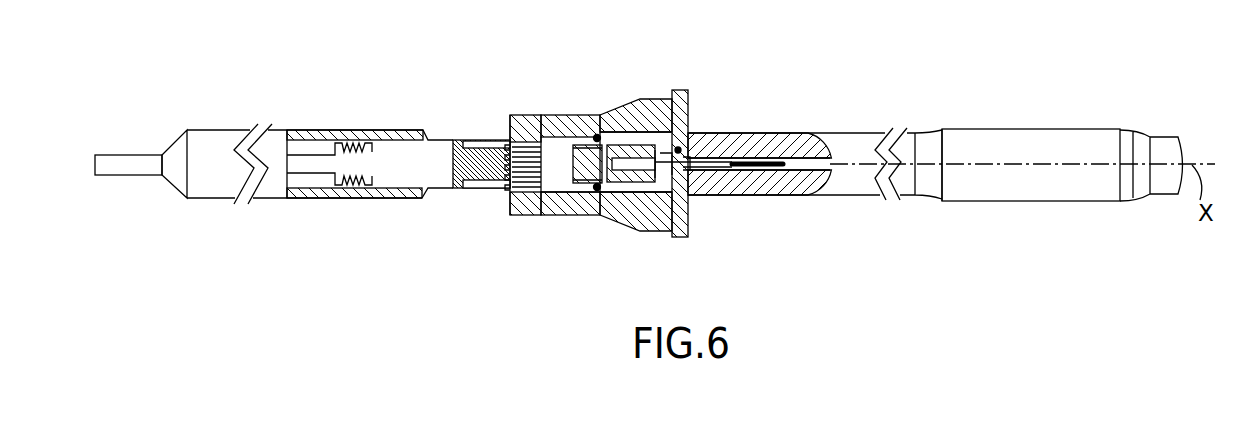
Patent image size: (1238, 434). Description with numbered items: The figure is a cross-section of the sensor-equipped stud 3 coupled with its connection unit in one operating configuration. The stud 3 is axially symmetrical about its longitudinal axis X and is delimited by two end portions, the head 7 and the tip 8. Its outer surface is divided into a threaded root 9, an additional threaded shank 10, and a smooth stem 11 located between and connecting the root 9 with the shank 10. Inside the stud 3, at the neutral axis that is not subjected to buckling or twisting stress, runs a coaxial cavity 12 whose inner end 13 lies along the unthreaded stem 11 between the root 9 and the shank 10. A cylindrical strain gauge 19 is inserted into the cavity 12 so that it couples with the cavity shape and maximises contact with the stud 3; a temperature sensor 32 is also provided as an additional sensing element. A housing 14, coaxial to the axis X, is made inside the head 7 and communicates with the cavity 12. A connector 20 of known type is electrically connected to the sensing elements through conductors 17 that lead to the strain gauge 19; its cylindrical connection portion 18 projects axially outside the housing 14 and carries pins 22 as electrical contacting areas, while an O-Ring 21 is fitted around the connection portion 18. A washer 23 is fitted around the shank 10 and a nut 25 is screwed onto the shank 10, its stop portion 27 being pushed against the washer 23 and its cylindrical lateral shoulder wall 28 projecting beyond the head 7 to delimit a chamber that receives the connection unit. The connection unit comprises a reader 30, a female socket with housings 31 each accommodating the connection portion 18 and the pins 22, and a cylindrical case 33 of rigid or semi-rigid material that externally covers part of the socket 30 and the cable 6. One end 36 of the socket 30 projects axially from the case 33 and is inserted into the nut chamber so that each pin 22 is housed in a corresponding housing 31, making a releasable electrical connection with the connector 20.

The stud 3 is at (1004, 94).
The cable 6 is at (110, 158).
The head 7 is at (618, 118).
The tip 8 is at (1168, 137).
The root 9 is at (1063, 128).
The shank 10 is at (648, 131).
The stem 11 is at (874, 128).
The cavity 12 is at (731, 170).
The inner end 13 is at (866, 132).
The housing 14 is at (660, 176).
The conductors 17 is at (758, 158).
The connection portion 18 is at (574, 190).
The strain gauge 19 is at (791, 152).
The connector 20 is at (618, 190).
The O-Ring 21 is at (596, 135).
The pins 22 is at (581, 157).
The washer 23 is at (690, 93).
The nut 25 is at (547, 219).
The stop portion 27 is at (633, 227).
The lateral shoulder wall 28 is at (530, 212).
The reader 30 is at (425, 166).
The housings 31 is at (478, 139).
The temperature sensor 32 is at (681, 148).
The case 33 is at (213, 140).
The end of the socket 36 is at (162, 152).